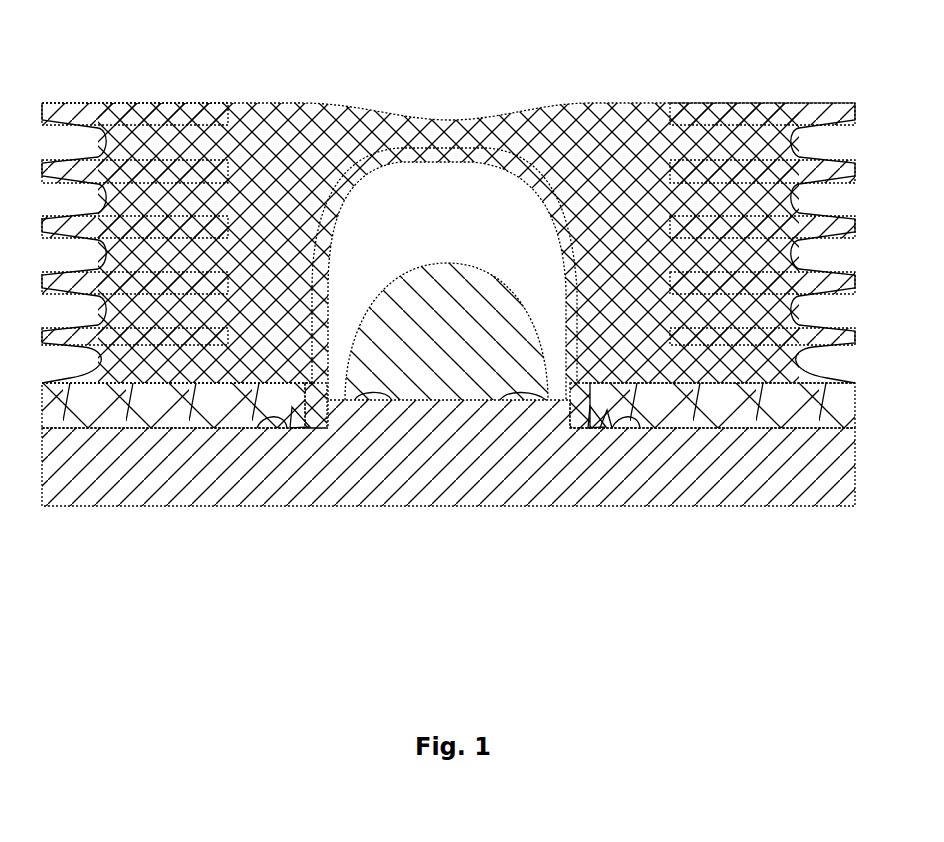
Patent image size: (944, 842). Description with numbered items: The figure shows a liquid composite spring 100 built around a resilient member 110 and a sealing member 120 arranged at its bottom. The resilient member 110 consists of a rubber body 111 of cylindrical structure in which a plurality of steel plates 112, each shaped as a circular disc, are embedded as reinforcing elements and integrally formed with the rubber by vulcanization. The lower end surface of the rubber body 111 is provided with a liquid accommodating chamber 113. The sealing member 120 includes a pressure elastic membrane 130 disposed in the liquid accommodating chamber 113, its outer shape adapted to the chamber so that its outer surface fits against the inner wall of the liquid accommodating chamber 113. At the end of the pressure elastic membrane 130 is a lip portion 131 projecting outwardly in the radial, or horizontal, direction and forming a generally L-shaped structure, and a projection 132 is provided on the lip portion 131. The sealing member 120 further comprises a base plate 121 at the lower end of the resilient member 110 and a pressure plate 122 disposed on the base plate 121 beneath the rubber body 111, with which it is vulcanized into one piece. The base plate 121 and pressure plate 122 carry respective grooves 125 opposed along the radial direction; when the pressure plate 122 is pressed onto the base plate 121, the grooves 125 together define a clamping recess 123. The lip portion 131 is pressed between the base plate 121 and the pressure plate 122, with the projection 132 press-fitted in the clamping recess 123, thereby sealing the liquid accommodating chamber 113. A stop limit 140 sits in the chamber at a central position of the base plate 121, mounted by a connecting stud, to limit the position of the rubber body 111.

The liquid composite spring 100 is at (97, 35).
The resilient member 110 is at (288, 200).
The rubber body 111 is at (188, 367).
The steel plate 112 is at (215, 172).
The liquid accommodating chamber 113 is at (488, 242).
The sealing member 120 is at (605, 408).
The base plate 121 is at (225, 460).
The pressure plate 122 is at (773, 400).
The clamping recess 123 is at (627, 418).
The groove 125 is at (290, 428).
The pressure elastic membrane 130 is at (408, 160).
The lip portion 131 is at (592, 418).
The projection 132 is at (607, 410).
The stop limit 140 is at (447, 360).